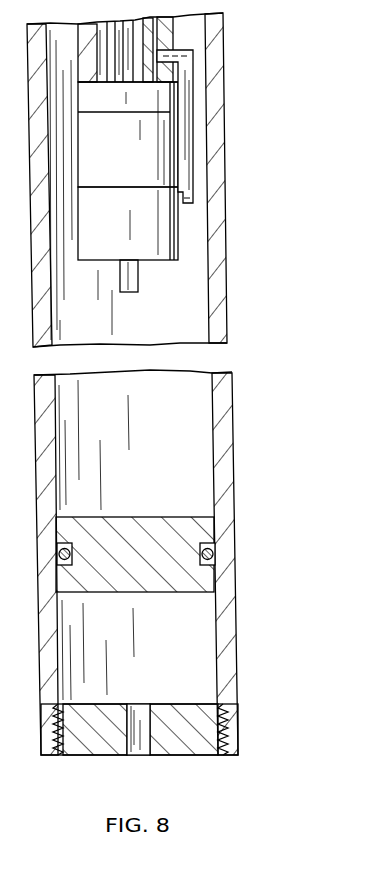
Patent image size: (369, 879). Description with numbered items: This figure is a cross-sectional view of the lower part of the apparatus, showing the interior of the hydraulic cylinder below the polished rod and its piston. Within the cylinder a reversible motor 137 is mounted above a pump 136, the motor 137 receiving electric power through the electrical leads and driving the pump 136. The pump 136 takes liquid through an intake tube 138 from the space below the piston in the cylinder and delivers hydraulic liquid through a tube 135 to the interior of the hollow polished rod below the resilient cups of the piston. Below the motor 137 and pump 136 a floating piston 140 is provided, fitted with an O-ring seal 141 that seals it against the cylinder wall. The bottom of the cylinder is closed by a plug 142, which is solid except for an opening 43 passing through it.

The tube 135 is at (193, 55).
The pump 136 is at (178, 237).
The reversible motor 137 is at (178, 162).
The intake tube 138 is at (138, 280).
The floating piston 140 is at (214, 520).
The O-ring seal 141 is at (215, 553).
The plug 142 is at (233, 715).
The passage 43 is at (142, 757).